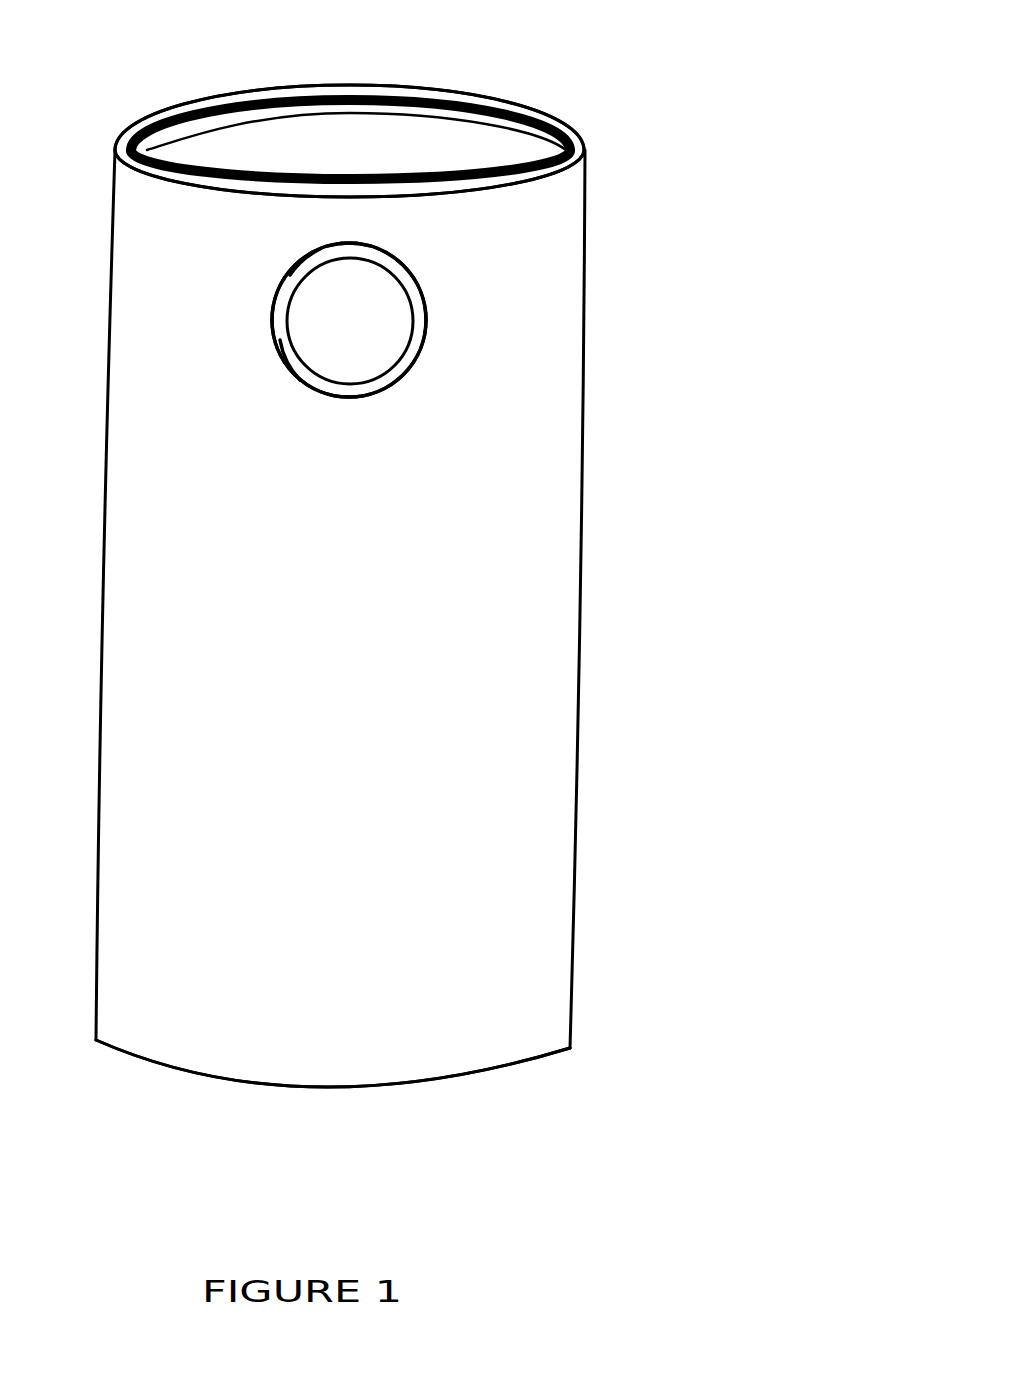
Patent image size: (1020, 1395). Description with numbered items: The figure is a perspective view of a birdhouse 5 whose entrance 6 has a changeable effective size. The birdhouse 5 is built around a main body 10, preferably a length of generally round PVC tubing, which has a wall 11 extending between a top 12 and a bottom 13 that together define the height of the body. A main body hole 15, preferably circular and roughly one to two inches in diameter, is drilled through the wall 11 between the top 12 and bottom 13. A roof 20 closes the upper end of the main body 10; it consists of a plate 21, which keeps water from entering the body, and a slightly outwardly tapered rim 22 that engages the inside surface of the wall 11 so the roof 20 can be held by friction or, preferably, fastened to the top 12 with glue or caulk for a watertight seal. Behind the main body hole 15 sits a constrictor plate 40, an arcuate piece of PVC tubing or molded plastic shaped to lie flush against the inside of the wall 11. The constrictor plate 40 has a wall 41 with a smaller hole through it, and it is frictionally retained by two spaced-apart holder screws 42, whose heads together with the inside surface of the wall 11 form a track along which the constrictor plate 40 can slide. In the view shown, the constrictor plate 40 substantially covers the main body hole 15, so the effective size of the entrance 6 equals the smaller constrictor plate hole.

The birdhouse 5 is at (679, 869).
The entrance 6 is at (368, 340).
The main body 10 is at (582, 529).
The wall 11 is at (582, 477).
The top 12 is at (585, 148).
The bottom 13 is at (570, 1048).
The main body hole 15 is at (420, 300).
The roof 20 is at (458, 132).
The plate 21 is at (387, 133).
The rim 22 is at (362, 108).
The constrictor plate 40 is at (288, 288).
The wall 41 is at (292, 357).
The holder screws 42 is at (320, 268).